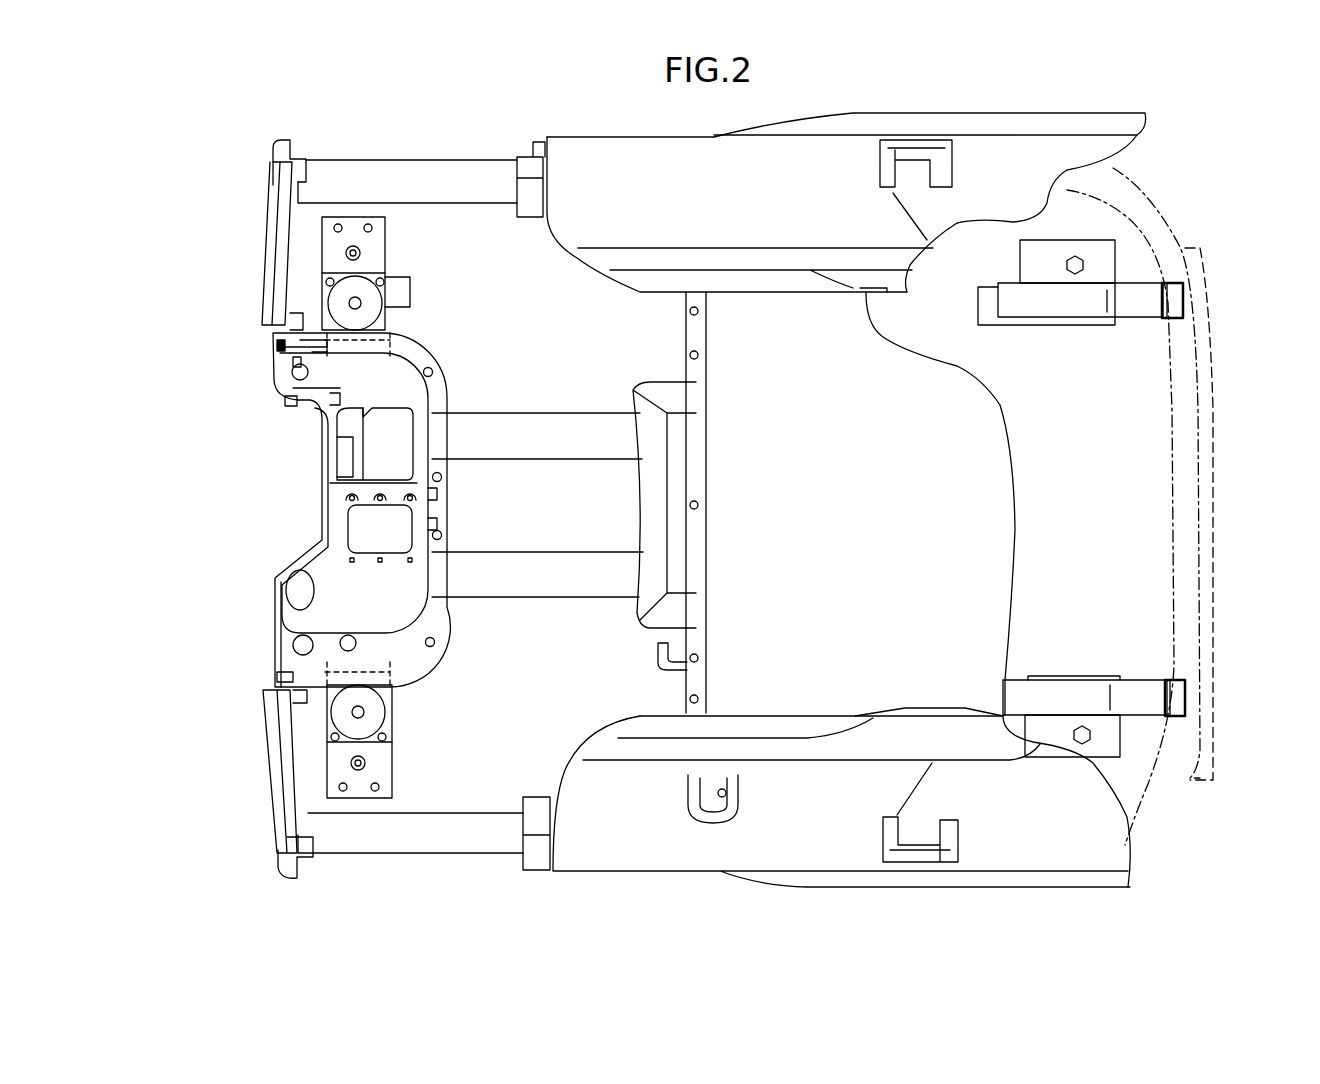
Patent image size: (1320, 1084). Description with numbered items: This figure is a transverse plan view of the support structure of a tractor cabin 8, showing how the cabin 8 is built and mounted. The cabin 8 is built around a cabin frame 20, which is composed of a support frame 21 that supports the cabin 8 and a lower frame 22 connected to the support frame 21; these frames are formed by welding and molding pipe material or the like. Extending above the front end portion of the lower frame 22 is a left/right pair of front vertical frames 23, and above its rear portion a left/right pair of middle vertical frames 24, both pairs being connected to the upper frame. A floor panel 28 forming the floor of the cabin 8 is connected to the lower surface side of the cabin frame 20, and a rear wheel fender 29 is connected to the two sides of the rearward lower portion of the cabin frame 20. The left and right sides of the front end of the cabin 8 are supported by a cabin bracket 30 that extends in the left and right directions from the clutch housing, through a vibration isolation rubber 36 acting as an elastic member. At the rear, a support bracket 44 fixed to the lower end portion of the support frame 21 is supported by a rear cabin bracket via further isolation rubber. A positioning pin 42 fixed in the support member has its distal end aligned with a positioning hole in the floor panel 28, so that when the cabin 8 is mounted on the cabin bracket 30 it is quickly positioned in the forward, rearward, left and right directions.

The cabin 8 is at (268, 434).
The cabin frame 20 is at (463, 858).
The support frame 21 is at (1072, 307).
The lower frame 22 is at (440, 185).
The front vertical frame 23 is at (277, 140).
The middle vertical frame 24 is at (878, 165).
The floor panel 28 is at (473, 525).
The rear wheel fender 29 is at (630, 180).
The cabin bracket 30 is at (332, 255).
The vibration isolation rubber 36 is at (373, 302).
The positioning pin 42 is at (357, 253).
The support bracket 44 is at (1043, 263).